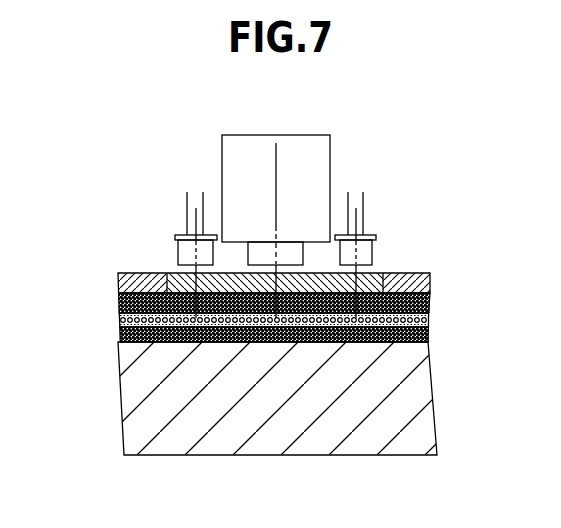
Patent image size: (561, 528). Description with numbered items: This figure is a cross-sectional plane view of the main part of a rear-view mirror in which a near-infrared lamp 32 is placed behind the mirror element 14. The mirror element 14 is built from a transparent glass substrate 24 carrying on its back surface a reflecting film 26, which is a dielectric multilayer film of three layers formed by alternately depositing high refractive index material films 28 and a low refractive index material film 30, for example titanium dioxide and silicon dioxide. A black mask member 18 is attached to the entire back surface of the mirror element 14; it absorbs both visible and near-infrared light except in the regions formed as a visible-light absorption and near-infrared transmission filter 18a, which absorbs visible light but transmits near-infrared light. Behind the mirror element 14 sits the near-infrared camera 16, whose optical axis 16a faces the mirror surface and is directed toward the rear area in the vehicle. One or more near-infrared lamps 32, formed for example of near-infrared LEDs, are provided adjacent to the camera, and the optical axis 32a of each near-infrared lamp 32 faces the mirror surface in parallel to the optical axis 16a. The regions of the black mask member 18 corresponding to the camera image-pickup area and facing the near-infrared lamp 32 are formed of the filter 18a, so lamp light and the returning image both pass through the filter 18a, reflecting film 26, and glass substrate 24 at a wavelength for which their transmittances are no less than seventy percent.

The mirror element 14 is at (258, 342).
The near-infrared camera 16 is at (317, 225).
The optical axis of the near-infrared camera 16a is at (276, 173).
The black mask member 18 is at (312, 261).
The visible-light absorption and near-infrared transmission filter 18a is at (380, 273).
The transparent glass substrate 24 is at (133, 441).
The reflecting film 26 is at (220, 325).
The high refractive index material film 28 is at (118, 302).
The low refractive index material film 30 is at (118, 322).
The near-infrared lamp 32 is at (295, 240).
The optical axis of the near-infrared lamp 32a is at (196, 220).